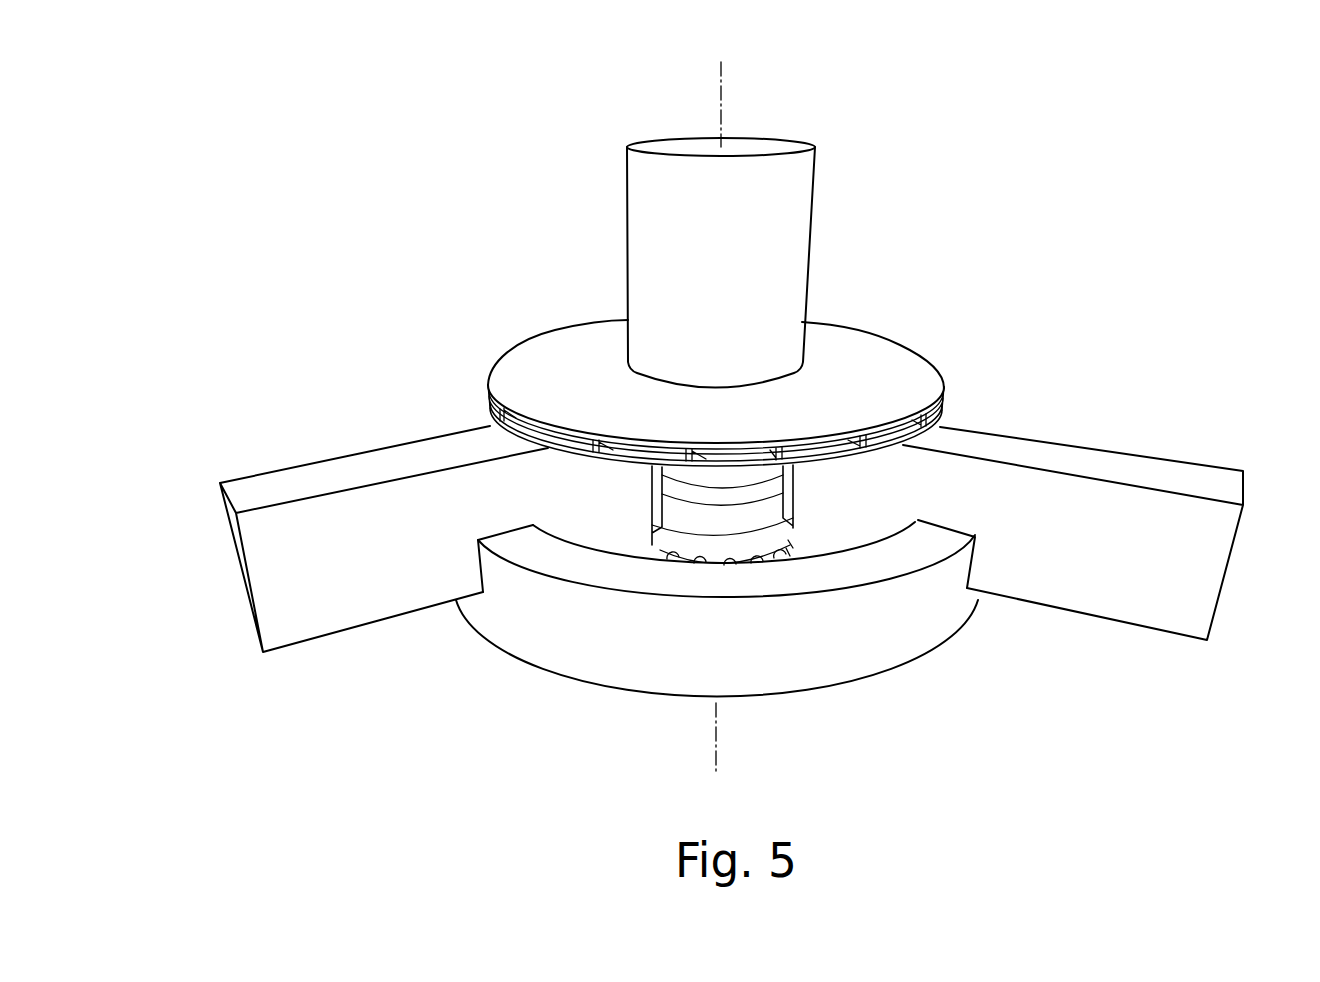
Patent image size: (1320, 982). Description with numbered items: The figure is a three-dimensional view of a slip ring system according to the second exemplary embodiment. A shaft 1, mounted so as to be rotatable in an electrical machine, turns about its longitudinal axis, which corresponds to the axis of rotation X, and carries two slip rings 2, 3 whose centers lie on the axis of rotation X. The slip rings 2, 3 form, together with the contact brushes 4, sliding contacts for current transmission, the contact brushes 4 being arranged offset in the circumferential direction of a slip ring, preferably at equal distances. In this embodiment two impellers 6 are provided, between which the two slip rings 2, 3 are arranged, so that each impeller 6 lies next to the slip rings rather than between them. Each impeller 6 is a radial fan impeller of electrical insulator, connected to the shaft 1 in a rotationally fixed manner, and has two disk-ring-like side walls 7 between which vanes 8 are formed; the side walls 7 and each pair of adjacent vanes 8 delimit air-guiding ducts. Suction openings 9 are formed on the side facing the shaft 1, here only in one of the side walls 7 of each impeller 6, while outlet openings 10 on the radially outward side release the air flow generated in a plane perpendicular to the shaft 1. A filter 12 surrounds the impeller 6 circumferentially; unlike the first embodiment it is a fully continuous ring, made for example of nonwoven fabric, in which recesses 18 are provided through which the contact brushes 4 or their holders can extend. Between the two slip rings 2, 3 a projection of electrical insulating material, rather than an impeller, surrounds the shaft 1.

The axis of rotation X is at (722, 90).
The shaft 1 is at (790, 217).
The slip ring 2 is at (710, 527).
The slip ring 3 is at (712, 478).
The contact brush 4 is at (283, 588).
The impeller 6 is at (701, 372).
The side wall 7 is at (560, 362).
The vane 8 is at (565, 428).
The suction opening 9 is at (742, 556).
The outlet opening 10 is at (643, 450).
The filter 12 is at (728, 631).
The recess 18 is at (482, 558).